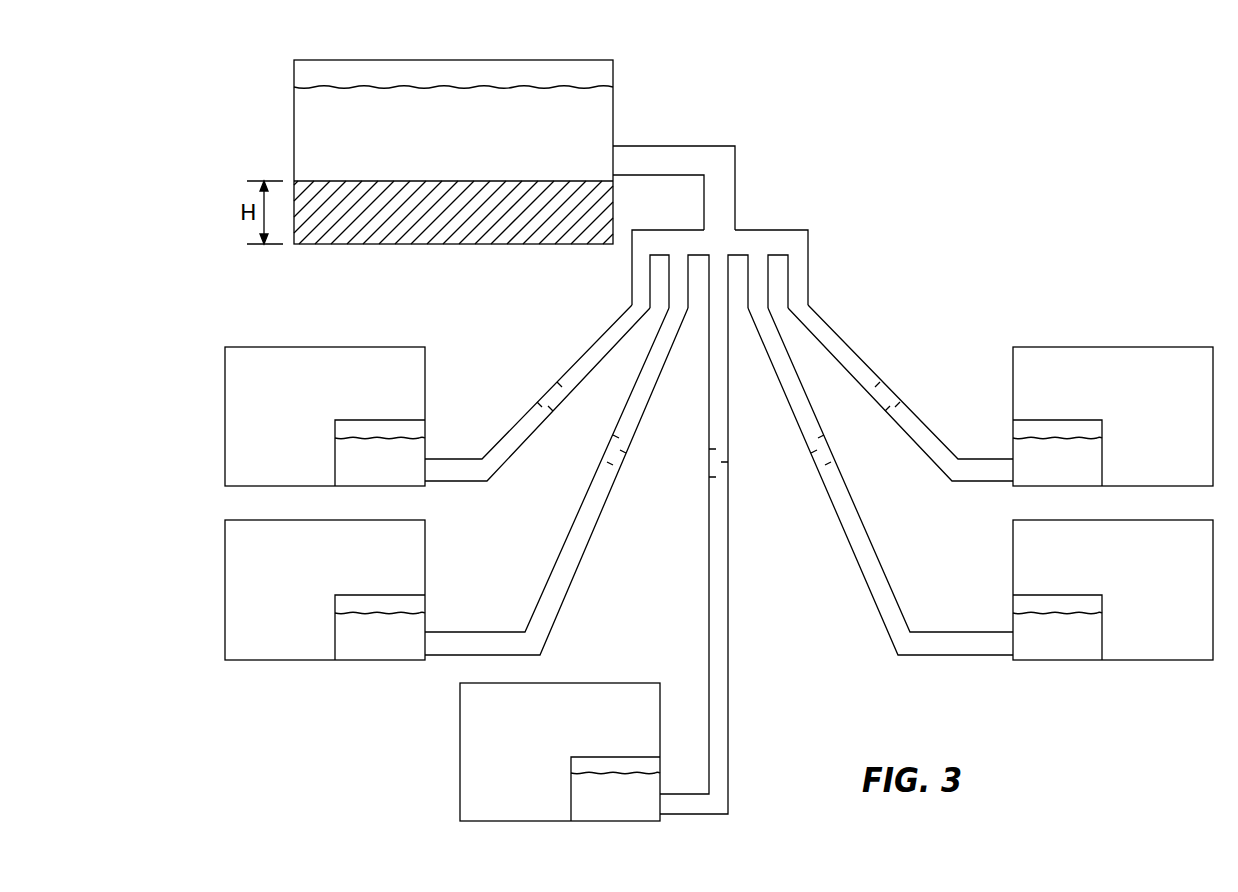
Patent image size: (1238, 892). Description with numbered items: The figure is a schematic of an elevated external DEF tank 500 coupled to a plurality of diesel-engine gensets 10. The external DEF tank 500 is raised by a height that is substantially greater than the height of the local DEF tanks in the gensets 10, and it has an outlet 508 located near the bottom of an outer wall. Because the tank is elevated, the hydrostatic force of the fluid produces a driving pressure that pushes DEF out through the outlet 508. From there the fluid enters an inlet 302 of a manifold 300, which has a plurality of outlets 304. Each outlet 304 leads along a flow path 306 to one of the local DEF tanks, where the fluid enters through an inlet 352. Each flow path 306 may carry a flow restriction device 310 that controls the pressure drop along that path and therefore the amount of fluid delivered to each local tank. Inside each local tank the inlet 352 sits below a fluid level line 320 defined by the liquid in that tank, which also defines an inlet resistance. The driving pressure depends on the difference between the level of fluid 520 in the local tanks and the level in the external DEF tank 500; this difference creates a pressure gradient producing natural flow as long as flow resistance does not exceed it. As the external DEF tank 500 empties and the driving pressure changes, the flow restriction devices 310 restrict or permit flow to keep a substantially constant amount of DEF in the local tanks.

The genset 10 is at (211, 401).
The manifold 300 is at (721, 245).
The inlet 302 is at (717, 207).
The outlets 304 is at (682, 274).
The flow path 306 is at (572, 351).
The flow restriction device 310 is at (558, 415).
The fluid level line 320 is at (398, 436).
The inlet 352 is at (427, 470).
The external DEF tank 500 is at (568, 59).
The outlet 508 is at (616, 162).
The level of fluid 520 is at (316, 86).